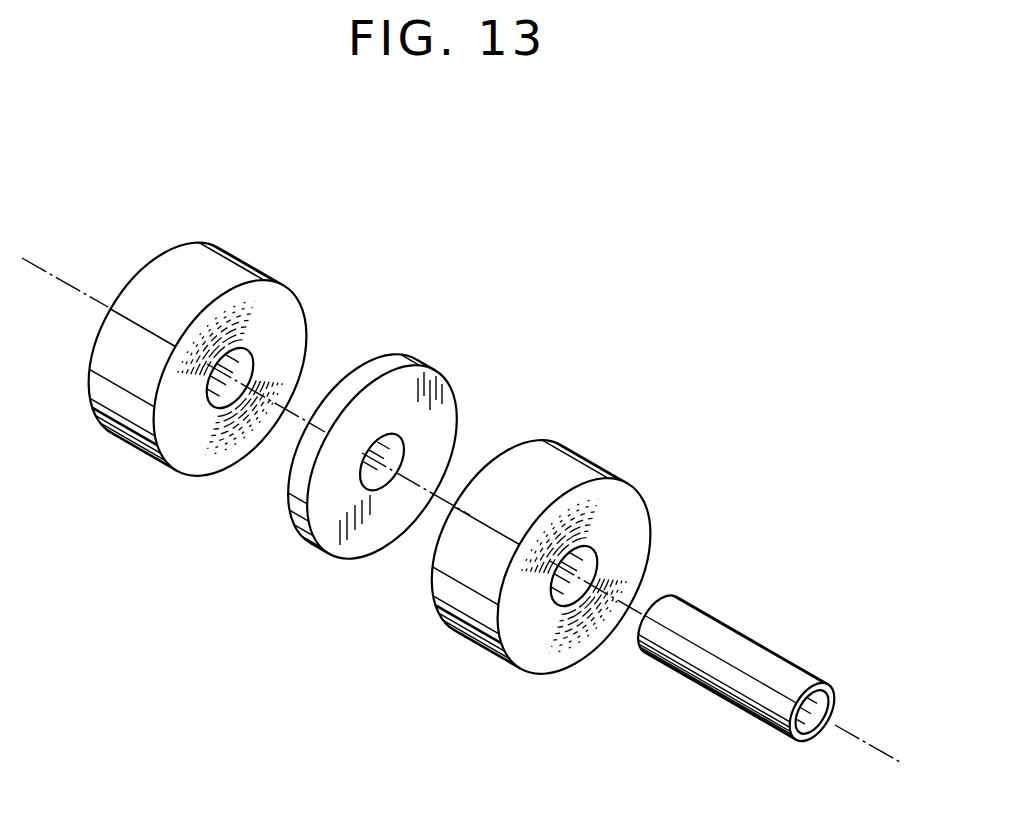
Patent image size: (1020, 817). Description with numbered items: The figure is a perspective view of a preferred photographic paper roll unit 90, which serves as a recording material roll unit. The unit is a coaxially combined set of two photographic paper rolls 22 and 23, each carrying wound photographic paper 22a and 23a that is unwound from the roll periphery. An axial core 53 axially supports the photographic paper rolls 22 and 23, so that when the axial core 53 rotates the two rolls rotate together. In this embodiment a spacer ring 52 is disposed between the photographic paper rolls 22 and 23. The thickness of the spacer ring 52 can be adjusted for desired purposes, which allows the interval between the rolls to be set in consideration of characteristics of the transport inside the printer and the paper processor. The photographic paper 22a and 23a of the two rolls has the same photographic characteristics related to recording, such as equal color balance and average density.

The photographic paper roll 22 is at (633, 515).
The photographic paper 22a is at (558, 455).
The photographic paper roll 23 is at (283, 312).
The photographic paper 23a is at (212, 256).
The spacer ring 52 is at (427, 383).
The axial core 53 is at (752, 638).
The photographic paper roll unit 90 is at (322, 619).